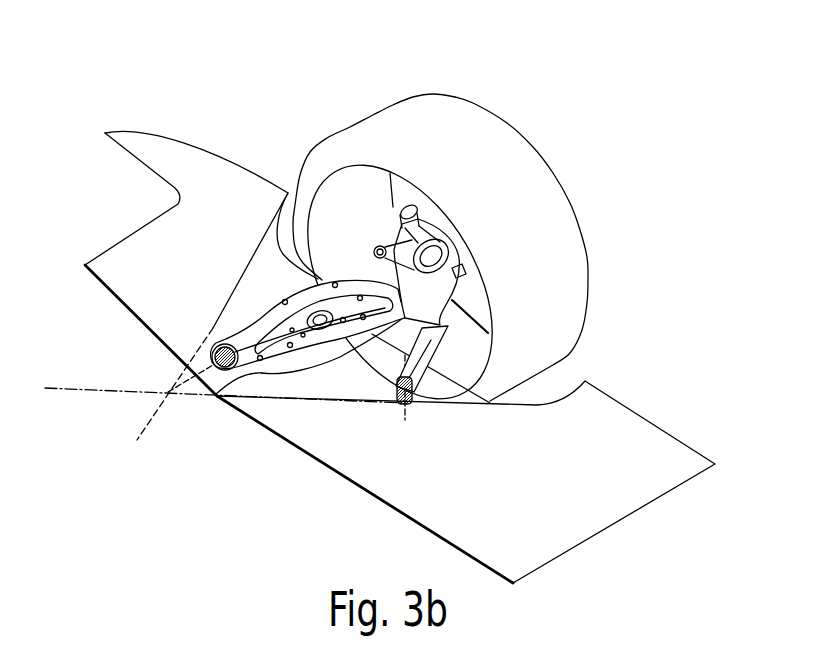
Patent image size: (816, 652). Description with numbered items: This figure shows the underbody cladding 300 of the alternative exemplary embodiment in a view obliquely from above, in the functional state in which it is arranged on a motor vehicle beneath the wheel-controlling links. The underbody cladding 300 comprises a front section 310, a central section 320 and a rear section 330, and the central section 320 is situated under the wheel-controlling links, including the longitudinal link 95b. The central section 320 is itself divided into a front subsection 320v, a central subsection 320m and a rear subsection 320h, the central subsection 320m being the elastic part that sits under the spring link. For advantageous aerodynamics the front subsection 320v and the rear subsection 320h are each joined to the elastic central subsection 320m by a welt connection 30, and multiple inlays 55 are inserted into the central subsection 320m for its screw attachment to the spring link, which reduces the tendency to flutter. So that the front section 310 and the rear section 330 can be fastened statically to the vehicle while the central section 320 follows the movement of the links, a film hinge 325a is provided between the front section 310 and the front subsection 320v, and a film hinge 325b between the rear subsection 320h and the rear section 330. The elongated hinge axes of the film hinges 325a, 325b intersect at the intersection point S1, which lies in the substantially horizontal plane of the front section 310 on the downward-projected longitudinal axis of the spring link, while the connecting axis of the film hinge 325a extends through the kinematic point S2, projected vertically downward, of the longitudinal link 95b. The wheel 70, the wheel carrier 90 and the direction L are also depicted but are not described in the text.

The underbody cladding 300 is at (120, 116).
The front section 310 is at (531, 497).
The central section 320 is at (488, 52).
The rear subsection 320h is at (272, 266).
The front subsection 320v is at (376, 381).
The central subsection 320m is at (255, 370).
The film hinge 325a is at (355, 372).
The film hinge 325b is at (222, 312).
The rear section 330 is at (218, 263).
The wheel 70 is at (548, 301).
The wheel carrier 90 is at (404, 207).
The longitudinal link 95b is at (440, 344).
The welt connection 30 is at (313, 387).
The inlays 55 is at (310, 352).
The intersection point S1 is at (159, 383).
The kinematic point S2 is at (418, 413).
The longitudinal direction L is at (146, 460).